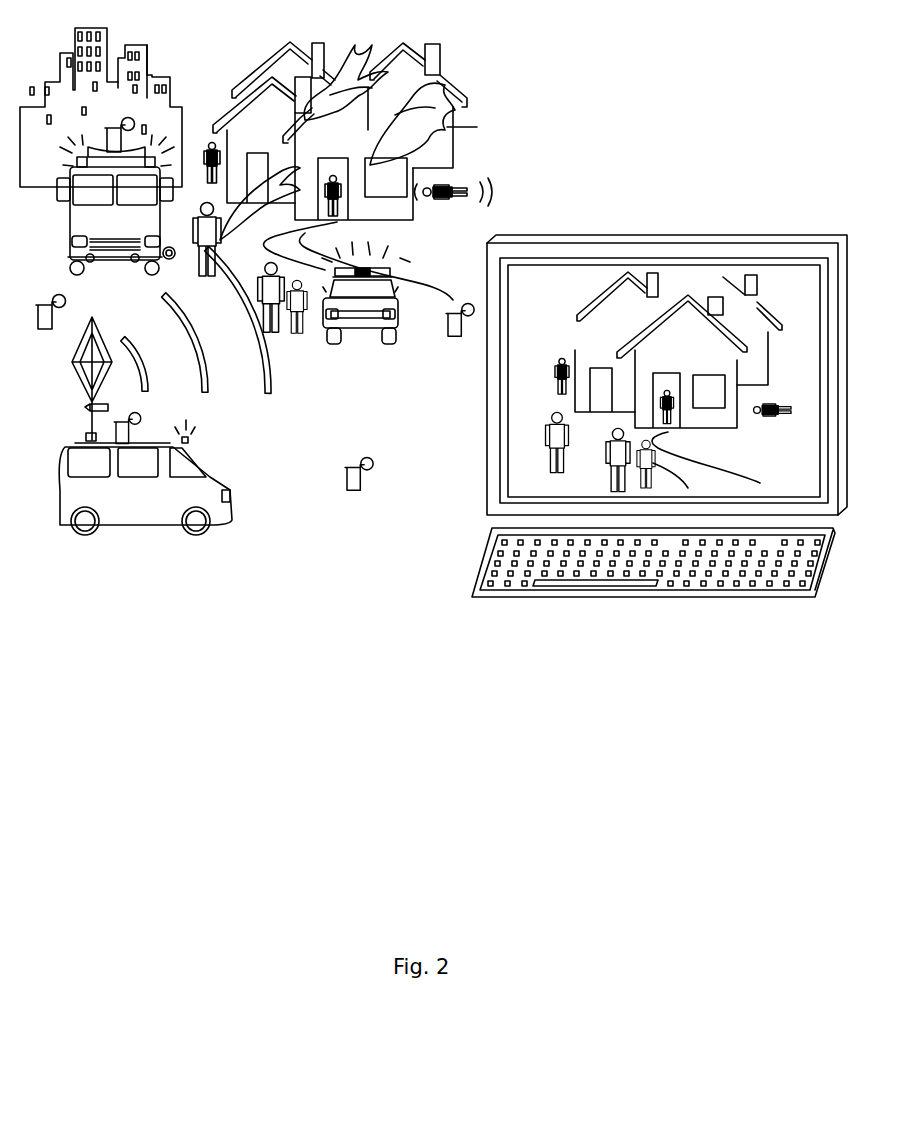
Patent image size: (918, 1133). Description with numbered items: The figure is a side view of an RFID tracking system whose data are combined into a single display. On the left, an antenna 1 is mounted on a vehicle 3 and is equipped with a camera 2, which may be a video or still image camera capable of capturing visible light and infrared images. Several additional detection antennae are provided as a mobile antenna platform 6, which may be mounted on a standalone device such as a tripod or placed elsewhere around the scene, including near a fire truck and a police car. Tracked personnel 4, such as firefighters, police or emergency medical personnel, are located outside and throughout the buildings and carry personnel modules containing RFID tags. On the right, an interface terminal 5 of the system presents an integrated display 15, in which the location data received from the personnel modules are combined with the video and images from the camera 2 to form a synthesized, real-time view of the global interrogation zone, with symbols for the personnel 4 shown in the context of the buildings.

The antenna 1 is at (85, 365).
The camera 2 is at (85, 405).
The vehicle 3 is at (97, 496).
The personnel 4 is at (425, 311).
The interface terminal 5 is at (487, 451).
The mobile antenna platform 6 is at (378, 479).
The integrated display 15 is at (568, 288).